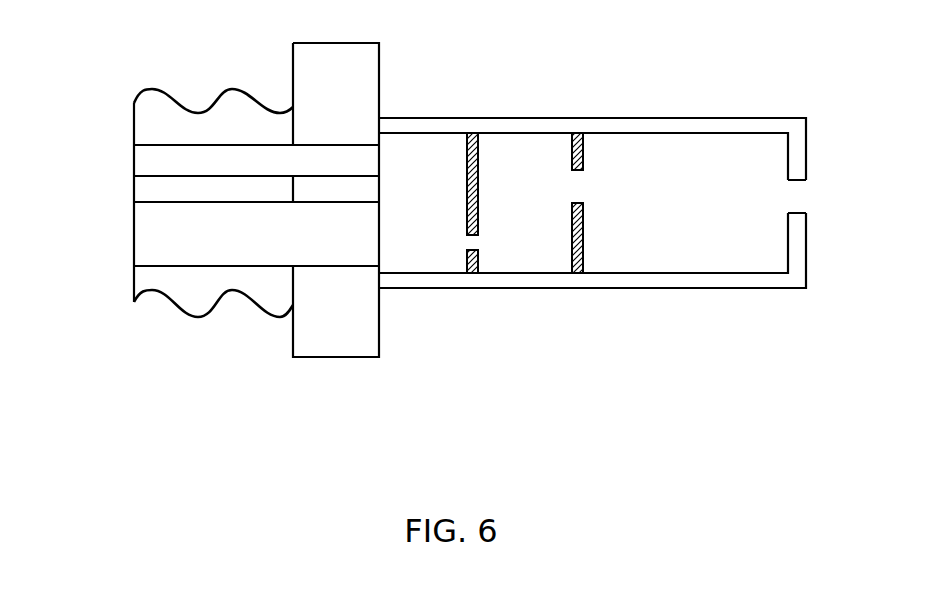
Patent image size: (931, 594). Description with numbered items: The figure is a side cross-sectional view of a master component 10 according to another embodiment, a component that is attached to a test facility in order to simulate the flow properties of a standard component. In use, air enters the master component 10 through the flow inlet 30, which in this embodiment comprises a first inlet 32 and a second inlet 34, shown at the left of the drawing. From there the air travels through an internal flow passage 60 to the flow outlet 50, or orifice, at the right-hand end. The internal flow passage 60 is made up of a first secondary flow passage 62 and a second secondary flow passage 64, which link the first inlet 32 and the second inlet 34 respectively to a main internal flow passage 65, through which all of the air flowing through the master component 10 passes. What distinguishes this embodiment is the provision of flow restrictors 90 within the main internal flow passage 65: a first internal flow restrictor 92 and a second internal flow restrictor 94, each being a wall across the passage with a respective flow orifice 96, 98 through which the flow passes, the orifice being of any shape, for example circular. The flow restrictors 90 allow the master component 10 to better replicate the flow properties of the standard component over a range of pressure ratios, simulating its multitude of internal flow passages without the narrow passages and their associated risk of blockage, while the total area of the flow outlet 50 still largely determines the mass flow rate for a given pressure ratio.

The master component 10 is at (621, 259).
The flow inlet 30 is at (204, 203).
The first inlet 32 is at (145, 160).
The second inlet 34 is at (227, 234).
The flow outlet 50 is at (797, 200).
The internal flow passage 60 is at (346, 273).
The first secondary flow passage 62 is at (269, 162).
The second secondary flow passage 64 is at (226, 244).
The main internal flow passage 65 is at (445, 258).
The flow restrictors 90 is at (562, 282).
The first internal flow restrictor 92 is at (500, 250).
The second internal flow restrictor 94 is at (605, 250).
The flow orifice 96 is at (470, 243).
The flow orifice 98 is at (578, 187).